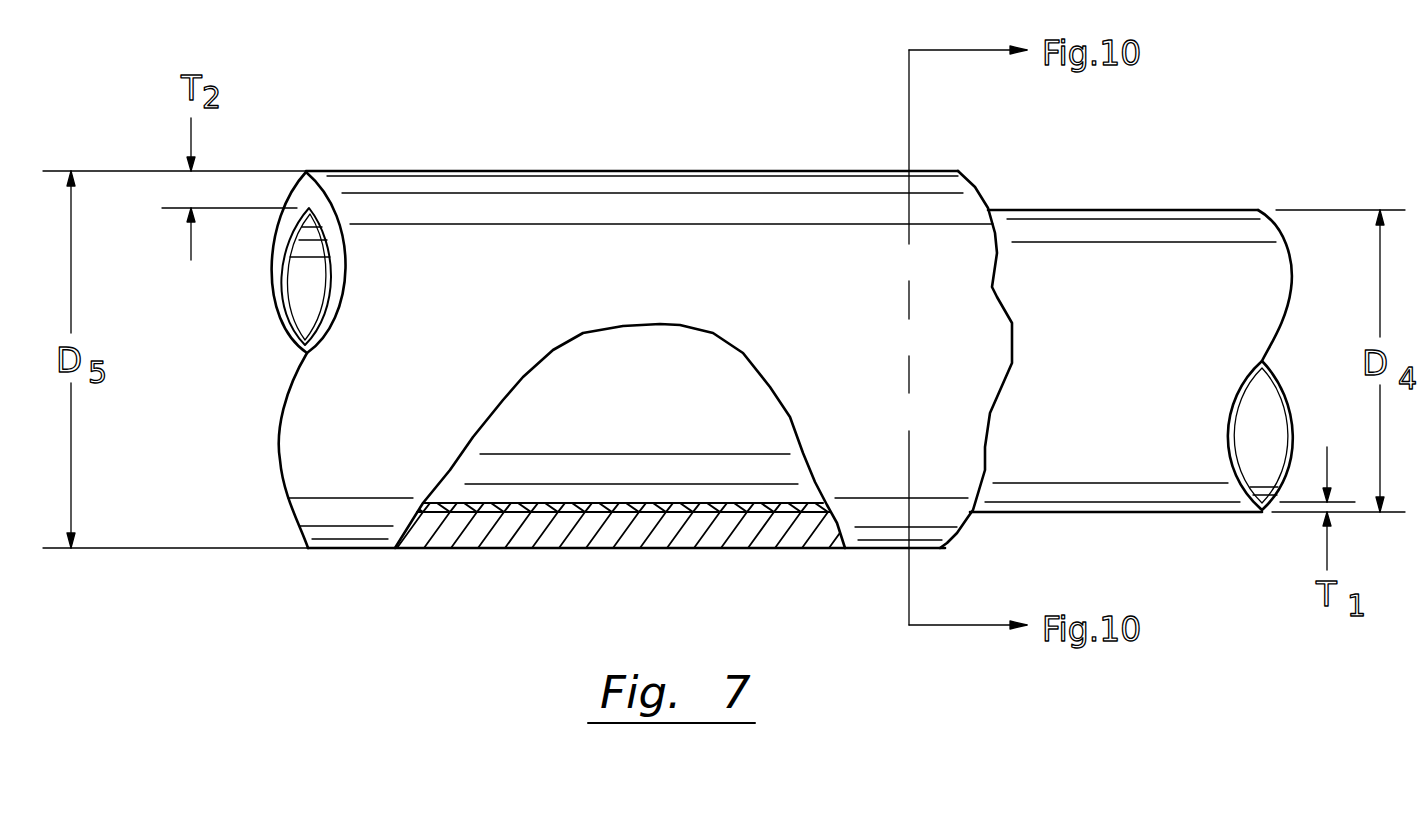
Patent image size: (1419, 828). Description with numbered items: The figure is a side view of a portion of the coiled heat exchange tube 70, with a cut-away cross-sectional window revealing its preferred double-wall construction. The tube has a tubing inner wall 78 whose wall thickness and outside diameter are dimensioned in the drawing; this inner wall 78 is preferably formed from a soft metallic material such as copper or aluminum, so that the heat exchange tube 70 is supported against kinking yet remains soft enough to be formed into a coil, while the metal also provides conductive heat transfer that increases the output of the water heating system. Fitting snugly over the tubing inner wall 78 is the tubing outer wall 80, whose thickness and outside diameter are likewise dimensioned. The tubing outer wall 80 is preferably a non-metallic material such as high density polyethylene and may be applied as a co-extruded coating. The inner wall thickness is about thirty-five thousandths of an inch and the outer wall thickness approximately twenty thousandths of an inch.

The coiled heat exchange tube 70 is at (670, 136).
The tubing inner wall 78 is at (597, 510).
The tubing outer wall 80 is at (687, 527).